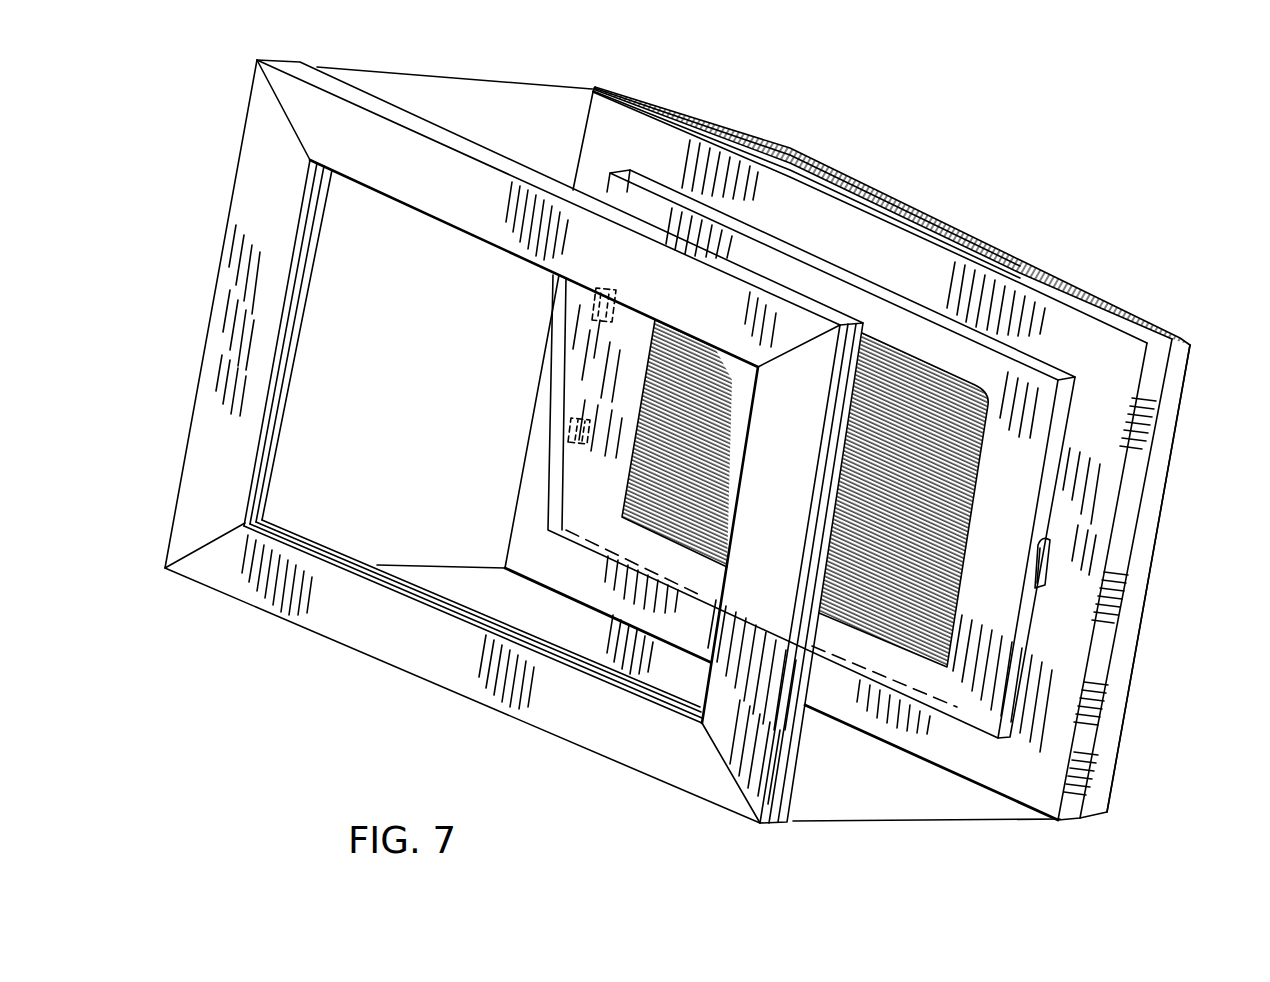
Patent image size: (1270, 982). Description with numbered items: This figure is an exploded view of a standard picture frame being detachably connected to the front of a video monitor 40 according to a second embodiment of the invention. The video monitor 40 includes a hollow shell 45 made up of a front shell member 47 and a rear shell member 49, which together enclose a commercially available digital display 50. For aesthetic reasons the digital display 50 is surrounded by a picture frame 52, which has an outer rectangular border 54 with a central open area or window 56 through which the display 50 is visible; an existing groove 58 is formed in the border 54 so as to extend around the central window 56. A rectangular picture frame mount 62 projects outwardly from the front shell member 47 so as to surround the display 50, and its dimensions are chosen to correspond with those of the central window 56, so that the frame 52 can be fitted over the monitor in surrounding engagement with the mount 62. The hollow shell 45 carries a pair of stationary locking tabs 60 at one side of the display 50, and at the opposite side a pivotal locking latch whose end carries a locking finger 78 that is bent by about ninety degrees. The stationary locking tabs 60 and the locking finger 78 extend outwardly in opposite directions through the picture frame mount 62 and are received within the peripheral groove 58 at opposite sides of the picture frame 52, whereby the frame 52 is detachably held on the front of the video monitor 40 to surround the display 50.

The video monitor 40 is at (1178, 467).
The hollow shell 45 is at (806, 156).
The front shell member 47 is at (1123, 512).
The rear shell member 49 is at (1108, 725).
The digital display 50 is at (687, 383).
The picture frame 52 is at (342, 644).
The border 54 is at (267, 297).
The central window 56 is at (410, 455).
The groove 58 is at (313, 220).
The stationary locking tabs 60 is at (590, 310).
The picture frame mount 62 is at (852, 298).
The locking finger 78 is at (1044, 578).